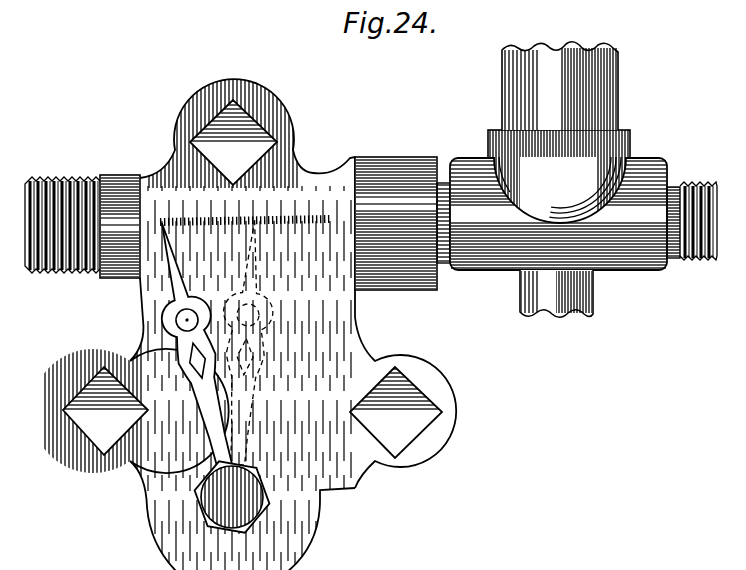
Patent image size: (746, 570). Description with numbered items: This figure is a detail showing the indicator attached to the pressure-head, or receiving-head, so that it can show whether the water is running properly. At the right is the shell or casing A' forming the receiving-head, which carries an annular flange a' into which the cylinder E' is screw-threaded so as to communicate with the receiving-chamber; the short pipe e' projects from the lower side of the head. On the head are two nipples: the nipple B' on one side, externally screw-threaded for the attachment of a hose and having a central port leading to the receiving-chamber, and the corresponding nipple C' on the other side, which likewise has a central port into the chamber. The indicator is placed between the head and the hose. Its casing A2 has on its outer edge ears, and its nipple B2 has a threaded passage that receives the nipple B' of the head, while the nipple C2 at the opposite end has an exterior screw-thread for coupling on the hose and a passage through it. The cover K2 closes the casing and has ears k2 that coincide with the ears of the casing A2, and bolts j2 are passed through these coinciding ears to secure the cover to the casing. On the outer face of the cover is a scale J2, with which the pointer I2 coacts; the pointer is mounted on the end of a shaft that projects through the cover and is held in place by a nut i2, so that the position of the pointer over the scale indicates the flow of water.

The cover K2 is at (296, 345).
The ears k2 is at (275, 108).
The bolts j2 is at (252, 279).
The nipple C2 is at (62, 211).
The casing A2 is at (118, 242).
The scale J2 is at (228, 227).
The pointer I2 is at (160, 441).
The nut i2 is at (232, 496).
The nipple B2 is at (391, 176).
The nipple B' is at (448, 196).
The shell or casing A' is at (558, 214).
The annular flange a' is at (559, 178).
The cylinder E' is at (543, 86).
The lower pipe e' is at (556, 293).
The nipple C' is at (692, 208).